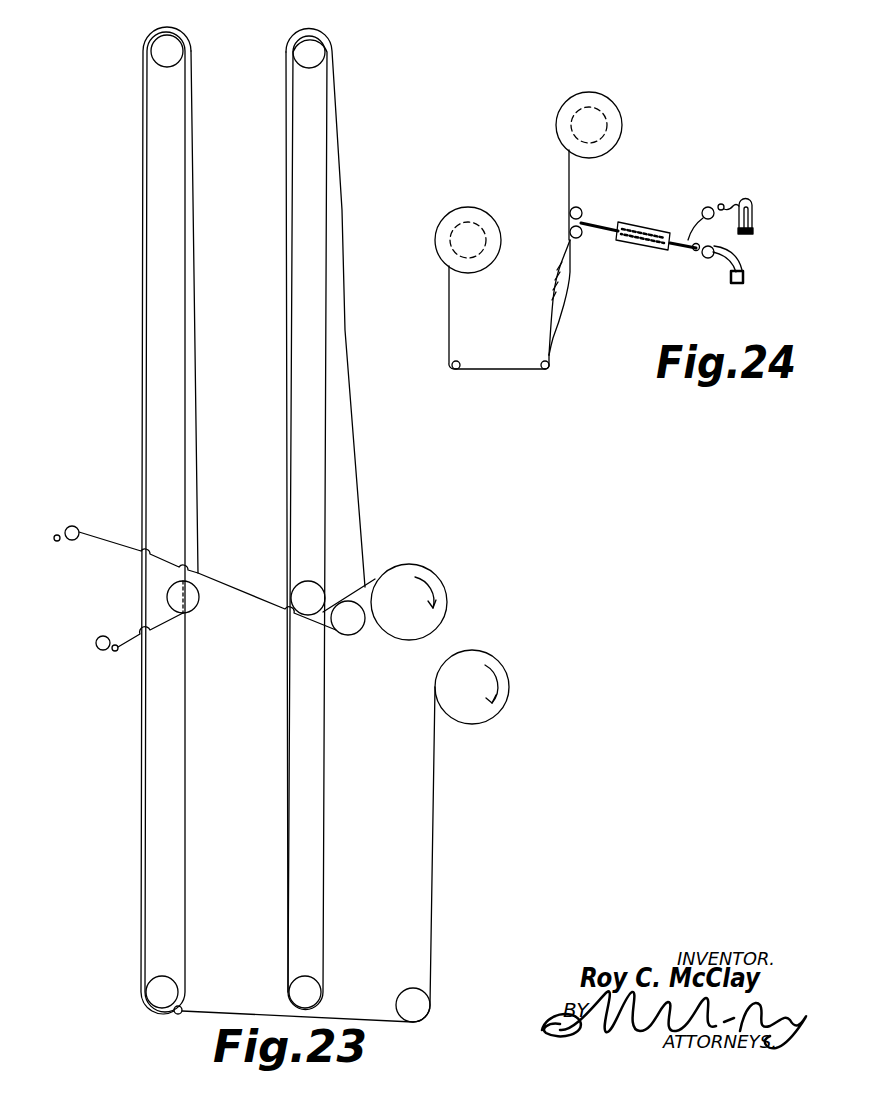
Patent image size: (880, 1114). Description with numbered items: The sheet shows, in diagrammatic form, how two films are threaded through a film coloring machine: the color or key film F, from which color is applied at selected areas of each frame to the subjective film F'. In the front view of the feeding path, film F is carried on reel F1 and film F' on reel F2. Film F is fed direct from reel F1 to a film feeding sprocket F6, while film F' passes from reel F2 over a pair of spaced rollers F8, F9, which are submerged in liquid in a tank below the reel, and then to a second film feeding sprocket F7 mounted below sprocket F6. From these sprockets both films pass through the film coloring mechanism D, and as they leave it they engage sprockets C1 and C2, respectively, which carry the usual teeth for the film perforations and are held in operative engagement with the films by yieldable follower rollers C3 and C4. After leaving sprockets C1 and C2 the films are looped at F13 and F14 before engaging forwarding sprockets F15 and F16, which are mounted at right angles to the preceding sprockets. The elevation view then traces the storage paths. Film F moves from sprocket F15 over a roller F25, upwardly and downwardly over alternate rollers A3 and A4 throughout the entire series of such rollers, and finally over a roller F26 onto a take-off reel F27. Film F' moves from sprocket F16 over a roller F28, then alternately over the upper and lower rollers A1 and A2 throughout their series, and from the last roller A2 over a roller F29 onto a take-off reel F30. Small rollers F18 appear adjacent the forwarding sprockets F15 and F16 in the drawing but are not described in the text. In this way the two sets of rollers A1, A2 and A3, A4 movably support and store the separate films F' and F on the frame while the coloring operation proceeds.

In FIG. 23, the upper set of rollers A1 is at (170, 49).
In FIG. 23, the lower set of rollers A2 is at (170, 990).
In FIG. 23, the upper set of rollers A3 is at (313, 50).
In FIG. 23, the lower set of rollers A4 is at (310, 992).
In FIG. 23, the color or key film F is at (212, 329).
In FIG. 24, the color or key film F is at (586, 195).
In FIG. 23, the subjective film F' is at (235, 524).
In FIG. 24, the subjective film F' is at (509, 304).
In FIG. 24, the reel F1 is at (608, 105).
In FIG. 24, the reel F2 is at (473, 213).
In FIG. 24, the film feeding sprocket F6 is at (580, 208).
In FIG. 24, the film feeding sprocket F7 is at (578, 238).
In FIG. 24, the roller F8 is at (460, 361).
In FIG. 24, the roller F9 is at (503, 363).
In FIG. 24, the loop F13 is at (746, 199).
In FIG. 24, the loop F14 is at (742, 255).
In FIG. 23, the forwarding sprocket F15 is at (75, 527).
In FIG. 24, the forwarding sprocket F15 is at (753, 230).
In FIG. 23, the forwarding sprocket F16 is at (105, 637).
In FIG. 24, the forwarding sprocket F16 is at (744, 277).
In FIG. 23, the small roller F18 is at (60, 542).
In FIG. 23, the roller F25 is at (353, 627).
In FIG. 23, the roller F26 is at (306, 596).
In FIG. 23, the take-off reel F27 is at (420, 578).
In FIG. 23, the roller F28 is at (190, 603).
In FIG. 23, the roller F29 is at (415, 1007).
In FIG. 23, the take-off reel F30 is at (480, 671).
In FIG. 24, the film coloring mechanism D is at (642, 232).
In FIG. 24, the sprocket C1 is at (702, 208).
In FIG. 24, the sprocket C2 is at (708, 258).
In FIG. 24, the yieldable follower roller C3 is at (721, 204).
In FIG. 24, the yieldable follower roller C4 is at (693, 249).